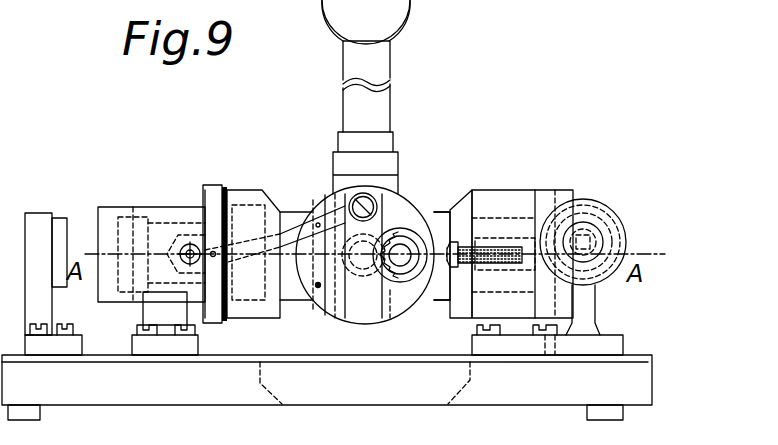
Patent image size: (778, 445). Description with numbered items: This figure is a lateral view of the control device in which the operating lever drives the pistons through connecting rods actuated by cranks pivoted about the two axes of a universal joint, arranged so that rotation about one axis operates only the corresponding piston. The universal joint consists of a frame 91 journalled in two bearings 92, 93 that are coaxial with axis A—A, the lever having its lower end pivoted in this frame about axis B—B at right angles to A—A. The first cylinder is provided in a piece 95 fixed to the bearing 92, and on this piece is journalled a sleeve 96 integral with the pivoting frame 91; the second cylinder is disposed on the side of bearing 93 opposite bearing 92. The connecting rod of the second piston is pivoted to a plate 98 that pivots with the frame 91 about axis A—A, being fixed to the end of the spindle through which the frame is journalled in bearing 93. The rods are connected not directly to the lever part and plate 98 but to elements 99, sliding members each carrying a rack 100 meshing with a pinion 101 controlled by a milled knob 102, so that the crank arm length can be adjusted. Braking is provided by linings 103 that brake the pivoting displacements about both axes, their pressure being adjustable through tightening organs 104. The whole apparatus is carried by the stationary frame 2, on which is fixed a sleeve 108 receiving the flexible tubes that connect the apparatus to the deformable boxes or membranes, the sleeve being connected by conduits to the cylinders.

The stationary frame 2 is at (547, 393).
The sleeve 108 is at (62, 230).
The piece 95 is at (113, 302).
The bearing 92 is at (168, 312).
The tightening organ 104 is at (213, 193).
The lining 103 is at (228, 193).
The sleeve 96 is at (239, 196).
The milled knob 102 is at (372, 306).
The element 99 is at (390, 205).
The rack 100 is at (383, 247).
The pinion 101 is at (394, 311).
The frame 91 is at (441, 296).
The plate 98 is at (545, 202).
The bearing 93 is at (513, 330).